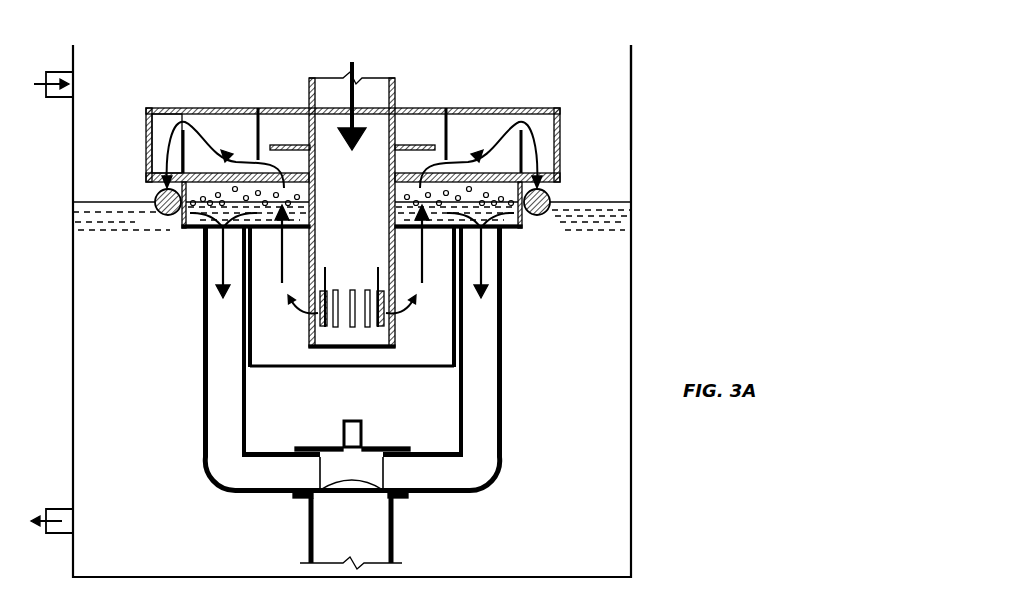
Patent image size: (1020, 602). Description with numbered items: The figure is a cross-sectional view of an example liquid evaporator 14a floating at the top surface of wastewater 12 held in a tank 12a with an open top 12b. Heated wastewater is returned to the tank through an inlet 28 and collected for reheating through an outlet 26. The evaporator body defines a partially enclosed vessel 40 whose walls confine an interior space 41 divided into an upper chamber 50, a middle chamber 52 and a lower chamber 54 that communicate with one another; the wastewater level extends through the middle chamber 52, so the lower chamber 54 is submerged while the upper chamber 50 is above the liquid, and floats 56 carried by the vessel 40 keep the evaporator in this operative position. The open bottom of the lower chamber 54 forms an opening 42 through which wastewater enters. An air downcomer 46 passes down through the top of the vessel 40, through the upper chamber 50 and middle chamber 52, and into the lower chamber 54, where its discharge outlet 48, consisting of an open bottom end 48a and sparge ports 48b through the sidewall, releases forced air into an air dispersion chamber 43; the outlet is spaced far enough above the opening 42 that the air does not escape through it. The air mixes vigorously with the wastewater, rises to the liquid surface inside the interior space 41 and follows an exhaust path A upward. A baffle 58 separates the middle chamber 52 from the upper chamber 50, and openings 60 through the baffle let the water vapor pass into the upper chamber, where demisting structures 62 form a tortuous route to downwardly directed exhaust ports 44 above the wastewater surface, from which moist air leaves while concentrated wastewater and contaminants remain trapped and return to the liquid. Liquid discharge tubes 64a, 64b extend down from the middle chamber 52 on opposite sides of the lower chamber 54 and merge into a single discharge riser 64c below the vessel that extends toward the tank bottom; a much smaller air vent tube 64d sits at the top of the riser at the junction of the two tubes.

The wastewater 12 is at (571, 381).
The tank 12a is at (632, 106).
The open top 12b is at (602, 58).
The liquid evaporator 14a is at (242, 527).
The outlet 26 is at (58, 509).
The inlet 28 is at (55, 72).
The vessel 40 is at (562, 106).
The interior space 41 is at (270, 268).
The opening 42 is at (437, 368).
The air dispersion chamber 43 is at (289, 320).
The exhaust ports 44 is at (147, 177).
The air downcomer 46 is at (309, 86).
The discharge outlet 48 is at (378, 335).
The open bottom end 48a is at (362, 350).
The sparge ports 48b is at (395, 322).
The upper chamber 50 is at (490, 130).
The middle chamber 52 is at (512, 198).
The lower chamber 54 is at (438, 297).
The floats 56 is at (160, 215).
The baffle 58 is at (196, 173).
The openings 60 is at (285, 177).
The demisting structures 62 is at (182, 138).
The liquid discharge tube 64a is at (203, 393).
The liquid discharge tube 64b is at (502, 455).
The discharge riser 64c is at (396, 528).
The air vent tube 64d is at (362, 427).
The exhaust path A is at (467, 160).